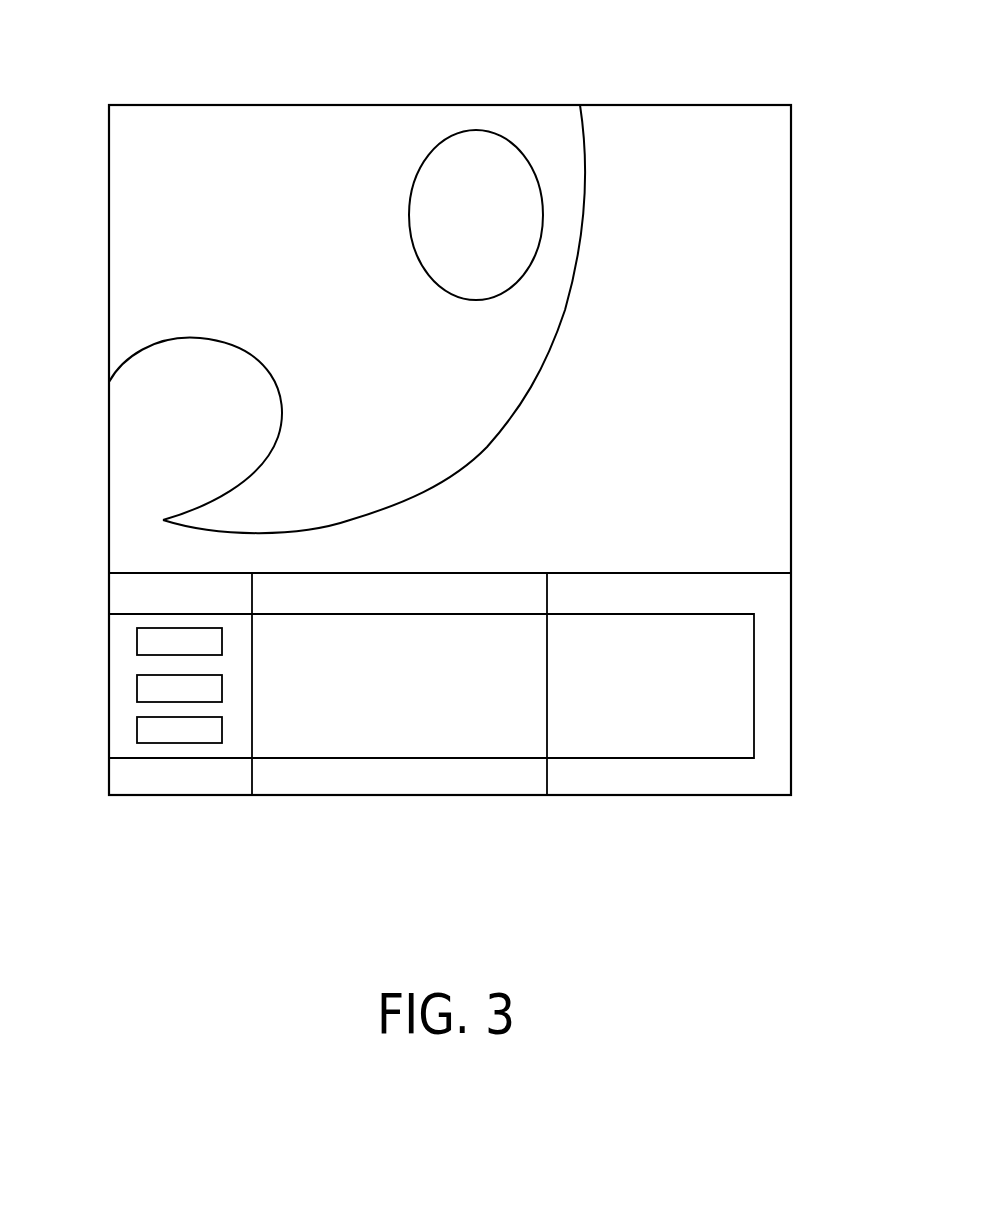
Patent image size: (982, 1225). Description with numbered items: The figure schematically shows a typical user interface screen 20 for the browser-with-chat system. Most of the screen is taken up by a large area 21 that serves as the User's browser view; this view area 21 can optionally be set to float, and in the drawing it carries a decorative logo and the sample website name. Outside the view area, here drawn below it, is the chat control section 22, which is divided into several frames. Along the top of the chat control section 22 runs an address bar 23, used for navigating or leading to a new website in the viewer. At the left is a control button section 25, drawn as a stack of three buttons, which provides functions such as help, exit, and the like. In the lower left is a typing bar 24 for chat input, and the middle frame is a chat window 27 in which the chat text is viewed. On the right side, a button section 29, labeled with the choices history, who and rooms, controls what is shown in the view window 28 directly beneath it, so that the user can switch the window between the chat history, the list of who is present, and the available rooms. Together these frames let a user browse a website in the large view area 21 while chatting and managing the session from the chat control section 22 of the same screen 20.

The user interface screen 20 is at (357, 60).
The view area 21 is at (782, 232).
The chat control section 22 is at (76, 741).
The address bar 23 is at (262, 602).
The typing bar 24 is at (277, 787).
The control button section 25 is at (120, 687).
The chat window 27 is at (413, 752).
The view window 28 is at (602, 752).
The button section 29 is at (783, 605).